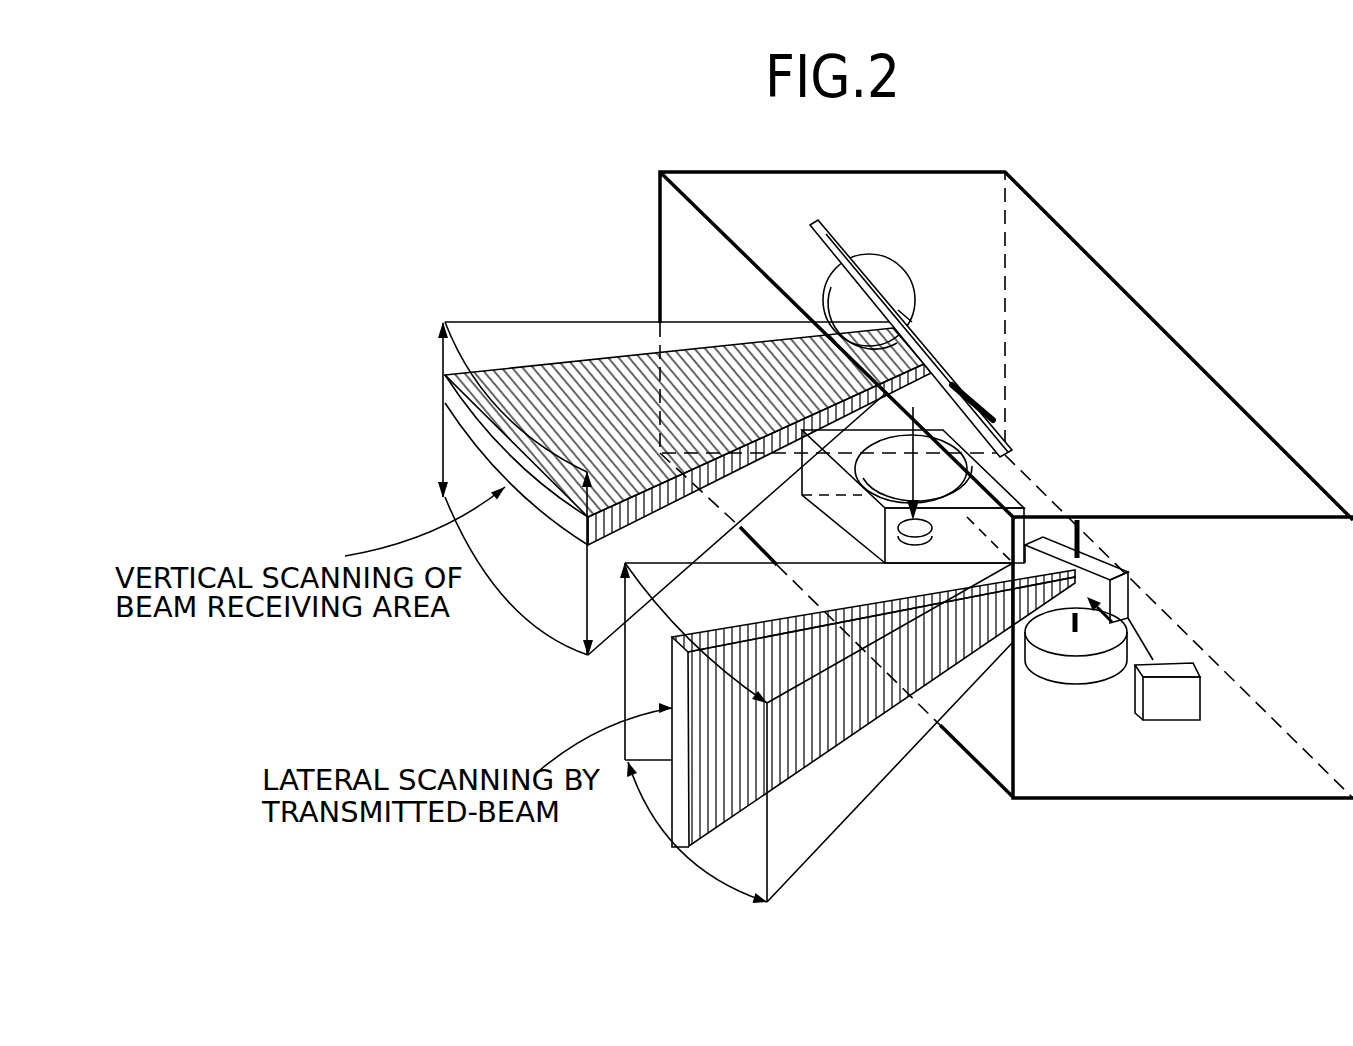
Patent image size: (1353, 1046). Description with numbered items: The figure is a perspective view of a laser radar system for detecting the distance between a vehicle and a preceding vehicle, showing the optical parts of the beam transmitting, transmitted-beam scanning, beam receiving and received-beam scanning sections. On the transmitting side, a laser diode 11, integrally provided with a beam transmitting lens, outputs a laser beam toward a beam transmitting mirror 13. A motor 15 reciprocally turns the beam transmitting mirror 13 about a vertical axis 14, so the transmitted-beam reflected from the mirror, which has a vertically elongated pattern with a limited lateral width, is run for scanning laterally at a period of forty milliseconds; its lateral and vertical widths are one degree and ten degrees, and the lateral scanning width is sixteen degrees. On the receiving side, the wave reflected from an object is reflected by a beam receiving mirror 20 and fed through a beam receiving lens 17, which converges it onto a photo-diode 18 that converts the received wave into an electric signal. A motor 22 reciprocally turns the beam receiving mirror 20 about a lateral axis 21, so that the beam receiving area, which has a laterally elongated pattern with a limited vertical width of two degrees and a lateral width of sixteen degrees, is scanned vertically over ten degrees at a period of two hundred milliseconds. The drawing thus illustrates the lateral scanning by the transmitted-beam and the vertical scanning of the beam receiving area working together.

The laser diode 11 is at (1165, 707).
The beam transmitting mirror 13 is at (1117, 593).
The vertical axis 14 is at (1080, 538).
The motor 15 is at (1070, 667).
The beam receiving lens 17 is at (1035, 482).
The photo-diode 18 is at (885, 528).
The beam receiving mirror 20 is at (833, 243).
The lateral axis 21 is at (988, 398).
The motor 22 is at (897, 290).